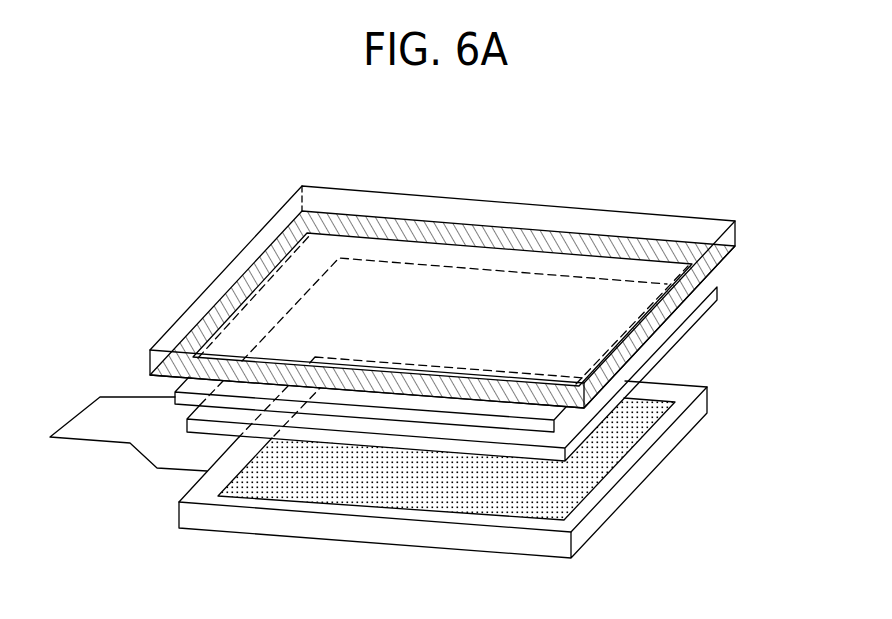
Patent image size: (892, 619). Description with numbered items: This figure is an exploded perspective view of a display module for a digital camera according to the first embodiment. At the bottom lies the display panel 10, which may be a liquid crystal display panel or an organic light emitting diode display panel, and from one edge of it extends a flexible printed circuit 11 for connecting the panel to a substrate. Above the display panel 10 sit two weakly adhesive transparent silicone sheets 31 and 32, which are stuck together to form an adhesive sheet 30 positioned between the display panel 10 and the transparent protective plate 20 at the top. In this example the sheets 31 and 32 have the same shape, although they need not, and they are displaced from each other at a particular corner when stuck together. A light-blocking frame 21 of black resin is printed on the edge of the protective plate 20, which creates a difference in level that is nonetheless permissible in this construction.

The display panel 10 is at (598, 513).
The flexible printed circuit 11 is at (127, 410).
The transparent protective plate 20 is at (451, 273).
The light-blocking frame 21 is at (362, 220).
The adhesive sheet 30 is at (493, 371).
The transparent silicone sheet 31 is at (578, 440).
The transparent silicone sheet 32 is at (572, 412).